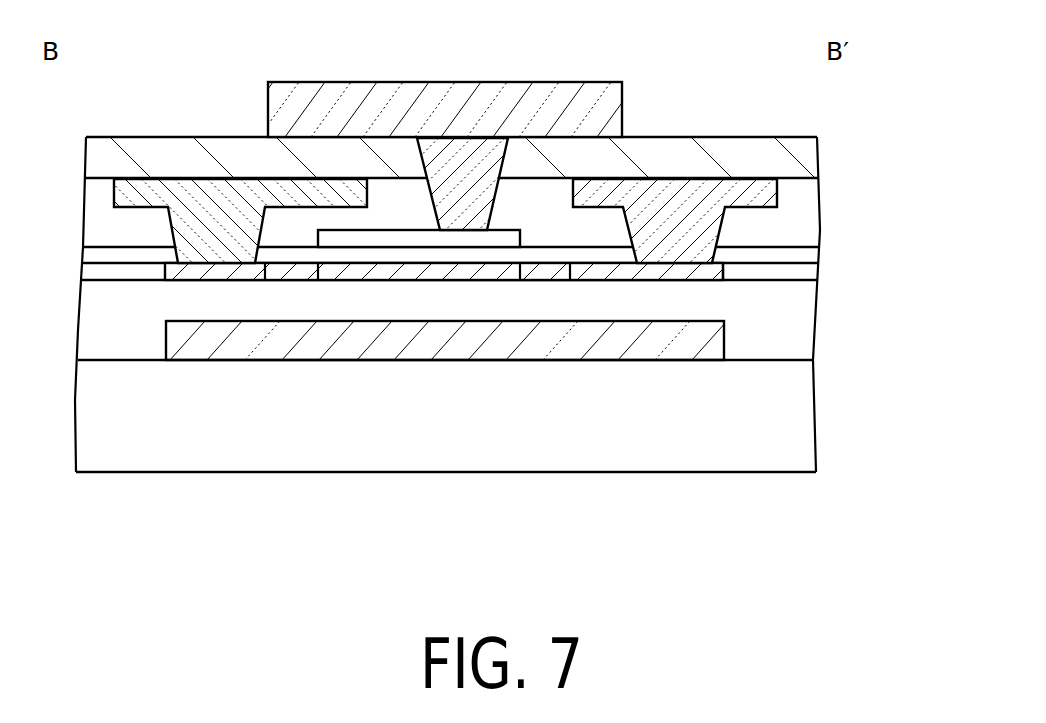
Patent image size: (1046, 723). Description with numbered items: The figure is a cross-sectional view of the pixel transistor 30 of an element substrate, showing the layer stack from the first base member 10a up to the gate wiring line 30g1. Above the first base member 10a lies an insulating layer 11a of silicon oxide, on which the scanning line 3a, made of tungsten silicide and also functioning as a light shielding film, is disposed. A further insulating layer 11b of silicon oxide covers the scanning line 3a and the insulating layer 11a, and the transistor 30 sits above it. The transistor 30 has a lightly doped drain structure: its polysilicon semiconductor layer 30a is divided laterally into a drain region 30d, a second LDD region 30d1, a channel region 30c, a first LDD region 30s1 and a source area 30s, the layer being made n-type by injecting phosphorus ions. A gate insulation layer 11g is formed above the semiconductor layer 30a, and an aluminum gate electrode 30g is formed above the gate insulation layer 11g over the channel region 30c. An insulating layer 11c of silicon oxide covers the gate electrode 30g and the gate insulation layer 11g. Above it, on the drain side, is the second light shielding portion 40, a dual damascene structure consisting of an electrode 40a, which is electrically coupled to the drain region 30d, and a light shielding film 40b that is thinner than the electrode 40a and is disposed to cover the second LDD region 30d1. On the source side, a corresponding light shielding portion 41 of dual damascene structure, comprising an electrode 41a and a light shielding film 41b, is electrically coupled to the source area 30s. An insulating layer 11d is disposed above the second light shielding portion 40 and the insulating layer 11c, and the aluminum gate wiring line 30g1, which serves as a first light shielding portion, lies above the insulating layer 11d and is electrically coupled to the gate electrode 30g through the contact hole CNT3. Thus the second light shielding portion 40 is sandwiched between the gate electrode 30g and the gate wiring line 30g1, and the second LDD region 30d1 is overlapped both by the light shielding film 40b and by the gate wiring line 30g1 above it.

The scanning line 3a is at (707, 362).
The first base member 10a is at (802, 417).
The insulating layer 11a is at (521, 309).
The insulating layer 11b is at (802, 323).
The insulating layer 11c is at (813, 218).
The insulating layer 11d is at (813, 160).
The gate insulation layer 11g is at (810, 260).
The transistor 30 is at (554, 414).
The semiconductor layer 30a is at (554, 408).
The channel region 30c is at (393, 280).
The drain region 30d is at (207, 280).
The second LDD region 30d1 is at (287, 280).
The gate electrode 30g is at (478, 241).
The gate wiring line 30g1 is at (471, 86).
The source area 30s is at (667, 280).
The first LDD region 30s1 is at (550, 280).
The second light shielding portion 40 is at (266, 141).
The electrode 40a is at (170, 233).
The light shielding film 40b is at (313, 190).
The light shielding portion 41 is at (649, 141).
The electrode 41a is at (722, 232).
The light shielding film 41b is at (773, 72).
The contact hole CNT3 is at (512, 162).